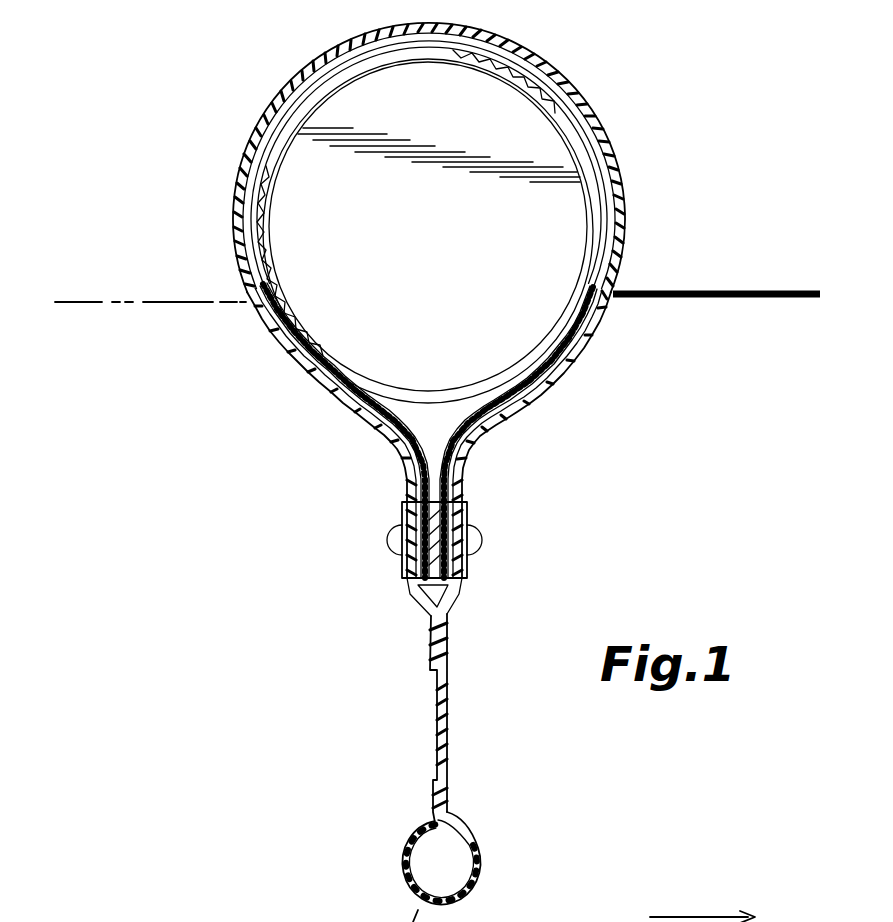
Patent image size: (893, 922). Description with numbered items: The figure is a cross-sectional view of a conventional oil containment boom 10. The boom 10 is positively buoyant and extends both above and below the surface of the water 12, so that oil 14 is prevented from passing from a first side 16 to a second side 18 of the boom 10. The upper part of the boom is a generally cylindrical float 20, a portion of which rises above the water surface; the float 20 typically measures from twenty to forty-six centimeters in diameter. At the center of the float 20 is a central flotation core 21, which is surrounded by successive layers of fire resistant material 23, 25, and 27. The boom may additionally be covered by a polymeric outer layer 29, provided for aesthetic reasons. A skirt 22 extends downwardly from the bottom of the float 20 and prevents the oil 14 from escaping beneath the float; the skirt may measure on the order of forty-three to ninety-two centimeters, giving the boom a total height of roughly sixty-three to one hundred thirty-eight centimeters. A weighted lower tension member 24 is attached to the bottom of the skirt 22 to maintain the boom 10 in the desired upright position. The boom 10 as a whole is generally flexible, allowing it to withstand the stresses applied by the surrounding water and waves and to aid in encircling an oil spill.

The boom 10 is at (232, 100).
The surface of the water 12 is at (102, 302).
The oil 14 is at (760, 292).
The first side 16 is at (617, 290).
The second side 18 is at (247, 297).
The float 20 is at (498, 96).
The central flotation core 21 is at (576, 228).
The skirt 22 is at (438, 712).
The layer of fire resistant material 23 is at (589, 193).
The lower tension member 24 is at (452, 857).
The layer of fire resistant material 25 is at (598, 160).
The layer of fire resistant material 27 is at (596, 138).
The polymeric outer layer 29 is at (589, 112).